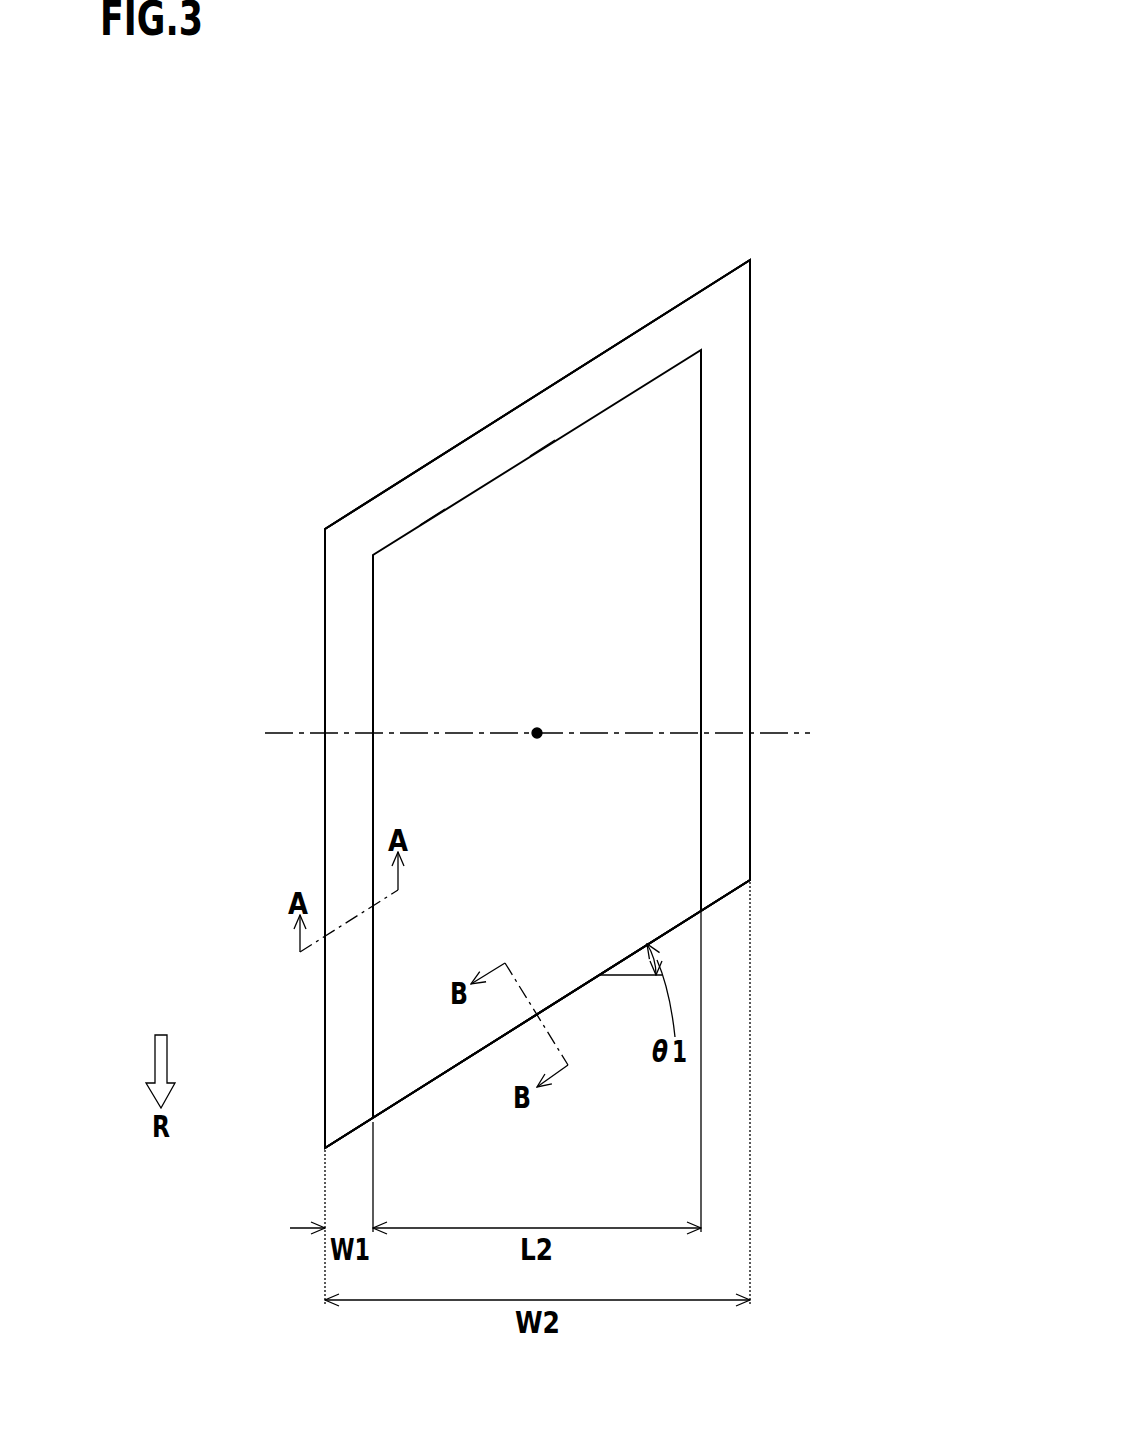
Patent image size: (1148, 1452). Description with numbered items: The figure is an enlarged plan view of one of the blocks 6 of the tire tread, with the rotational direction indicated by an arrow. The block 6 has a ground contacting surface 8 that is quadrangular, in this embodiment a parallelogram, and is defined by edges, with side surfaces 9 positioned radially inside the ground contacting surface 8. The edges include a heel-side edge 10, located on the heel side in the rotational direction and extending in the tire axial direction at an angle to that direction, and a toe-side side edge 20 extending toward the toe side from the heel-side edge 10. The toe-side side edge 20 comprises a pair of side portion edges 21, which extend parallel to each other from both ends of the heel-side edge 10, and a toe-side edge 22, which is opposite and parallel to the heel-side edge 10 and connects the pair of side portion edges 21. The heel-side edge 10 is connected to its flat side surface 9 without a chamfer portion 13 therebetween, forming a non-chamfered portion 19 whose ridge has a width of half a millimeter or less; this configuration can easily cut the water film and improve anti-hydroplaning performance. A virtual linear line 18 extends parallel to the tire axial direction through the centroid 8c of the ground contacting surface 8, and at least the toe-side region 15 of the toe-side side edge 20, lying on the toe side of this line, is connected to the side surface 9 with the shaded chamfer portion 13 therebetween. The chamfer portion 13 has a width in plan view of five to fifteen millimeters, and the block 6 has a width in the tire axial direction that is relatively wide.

The block 6 is at (333, 440).
The ground contacting surface 8 is at (555, 829).
The centroid 8c is at (540, 731).
The side surface 9 is at (663, 313).
The heel-side edge 10 is at (572, 992).
The chamfer portion 13 is at (487, 460).
The toe-side region 15 is at (432, 517).
The virtual linear line 18 is at (797, 733).
The non-chamfered portion 19 is at (462, 1062).
The toe-side side edge 20 is at (373, 773).
The side portion edge 21 is at (373, 813).
The toe-side edge 22 is at (542, 448).